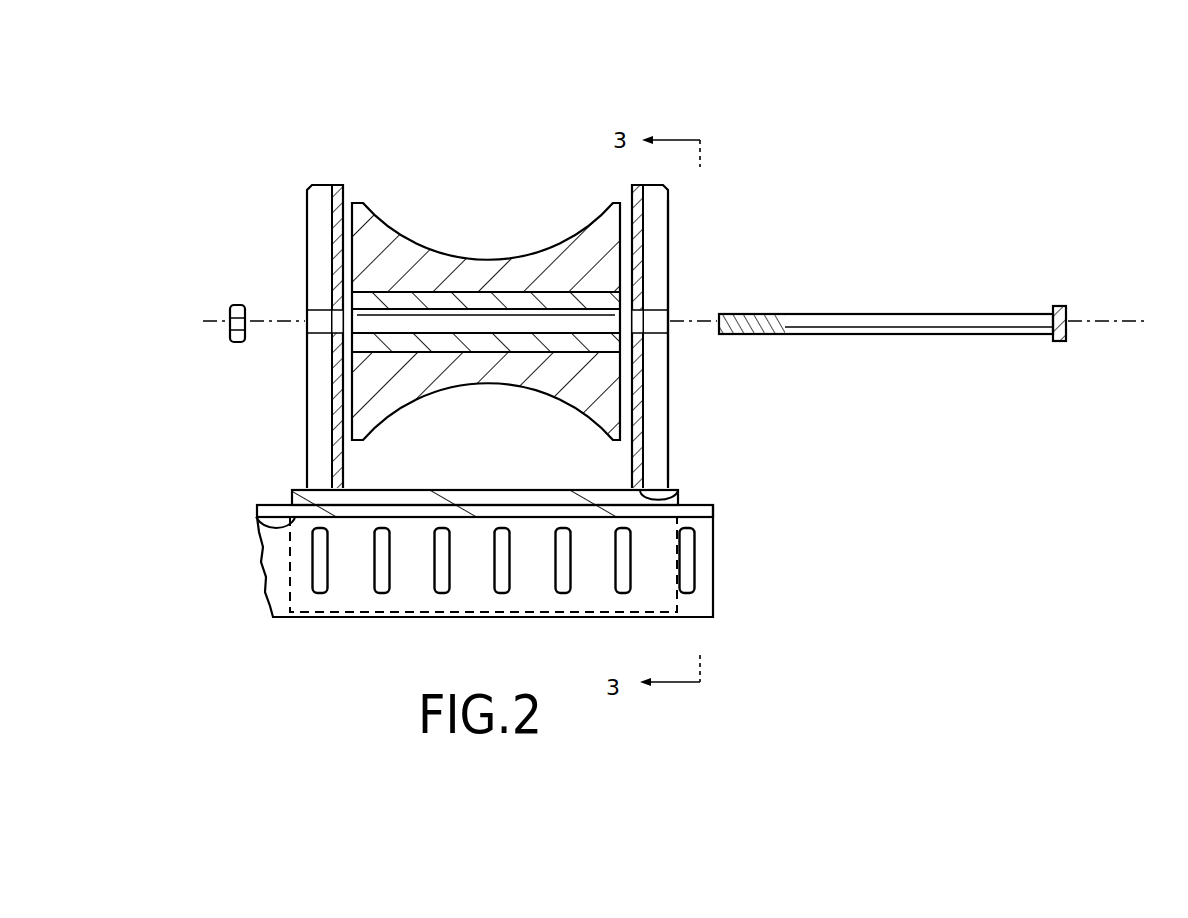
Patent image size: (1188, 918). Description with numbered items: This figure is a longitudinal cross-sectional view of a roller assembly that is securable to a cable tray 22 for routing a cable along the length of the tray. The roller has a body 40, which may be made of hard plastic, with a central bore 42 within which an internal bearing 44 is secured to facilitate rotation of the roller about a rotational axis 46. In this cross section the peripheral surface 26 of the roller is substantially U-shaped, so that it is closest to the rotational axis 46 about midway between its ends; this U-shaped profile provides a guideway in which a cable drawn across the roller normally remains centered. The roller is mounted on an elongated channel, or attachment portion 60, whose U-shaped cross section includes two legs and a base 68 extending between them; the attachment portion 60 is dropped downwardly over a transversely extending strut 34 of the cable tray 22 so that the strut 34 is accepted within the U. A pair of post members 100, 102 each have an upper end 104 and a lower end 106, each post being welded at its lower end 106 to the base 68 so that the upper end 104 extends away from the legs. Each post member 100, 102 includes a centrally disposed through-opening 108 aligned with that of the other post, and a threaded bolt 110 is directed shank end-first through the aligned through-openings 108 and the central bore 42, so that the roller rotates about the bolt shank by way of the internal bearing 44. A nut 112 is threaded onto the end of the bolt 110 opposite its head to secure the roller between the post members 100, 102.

The cable tray 22 is at (697, 620).
The peripheral surface 26 is at (398, 232).
The strut 34 is at (347, 620).
The body 40 is at (620, 245).
The central bore 42 is at (508, 296).
The internal bearing 44 is at (573, 318).
The rotational axis 46 is at (903, 271).
The attachment portion 60 is at (700, 505).
The base 68 is at (528, 490).
The post member 100 is at (307, 205).
The post member 102 is at (668, 222).
The upper end 104 is at (332, 185).
The lower end 106 is at (678, 490).
The through-opening 108 is at (323, 322).
The threaded bolt 110 is at (970, 314).
The nut 112 is at (236, 343).